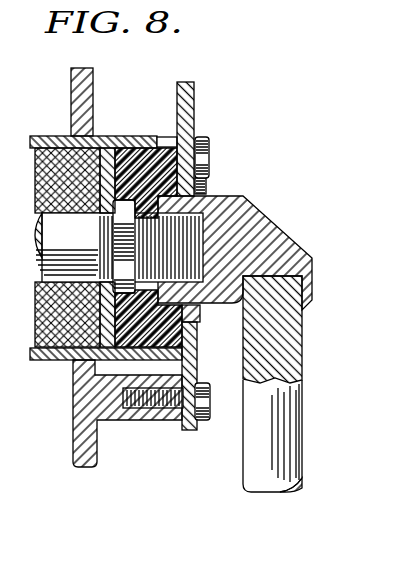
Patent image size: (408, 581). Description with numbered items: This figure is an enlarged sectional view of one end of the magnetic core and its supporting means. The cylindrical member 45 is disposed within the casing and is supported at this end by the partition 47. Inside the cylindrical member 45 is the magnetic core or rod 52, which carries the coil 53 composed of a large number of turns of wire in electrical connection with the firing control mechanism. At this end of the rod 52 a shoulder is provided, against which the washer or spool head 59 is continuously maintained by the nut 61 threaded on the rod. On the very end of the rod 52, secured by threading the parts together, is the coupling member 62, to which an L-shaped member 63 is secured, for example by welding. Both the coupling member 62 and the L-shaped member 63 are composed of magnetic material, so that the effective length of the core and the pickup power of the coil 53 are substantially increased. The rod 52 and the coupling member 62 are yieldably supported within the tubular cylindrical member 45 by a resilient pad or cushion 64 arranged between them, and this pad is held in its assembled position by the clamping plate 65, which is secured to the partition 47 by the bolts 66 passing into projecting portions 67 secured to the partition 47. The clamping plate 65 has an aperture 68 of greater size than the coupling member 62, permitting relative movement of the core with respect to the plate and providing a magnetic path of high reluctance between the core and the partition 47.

The cylindrical member 45 is at (58, 361).
The partition 47 is at (84, 413).
The magnetic core or rod 52 is at (119, 247).
The coil 53 is at (50, 134).
The washer or spool head 59 is at (107, 134).
The nut 61 is at (138, 146).
The coupling member 62 is at (265, 213).
The L-shaped member 63 is at (293, 453).
The resilient pad or cushion 64 is at (209, 166).
The clamping plate 65 is at (194, 107).
The bolts 66 is at (209, 150).
The projecting portions 67 is at (165, 138).
The aperture 68 is at (192, 312).